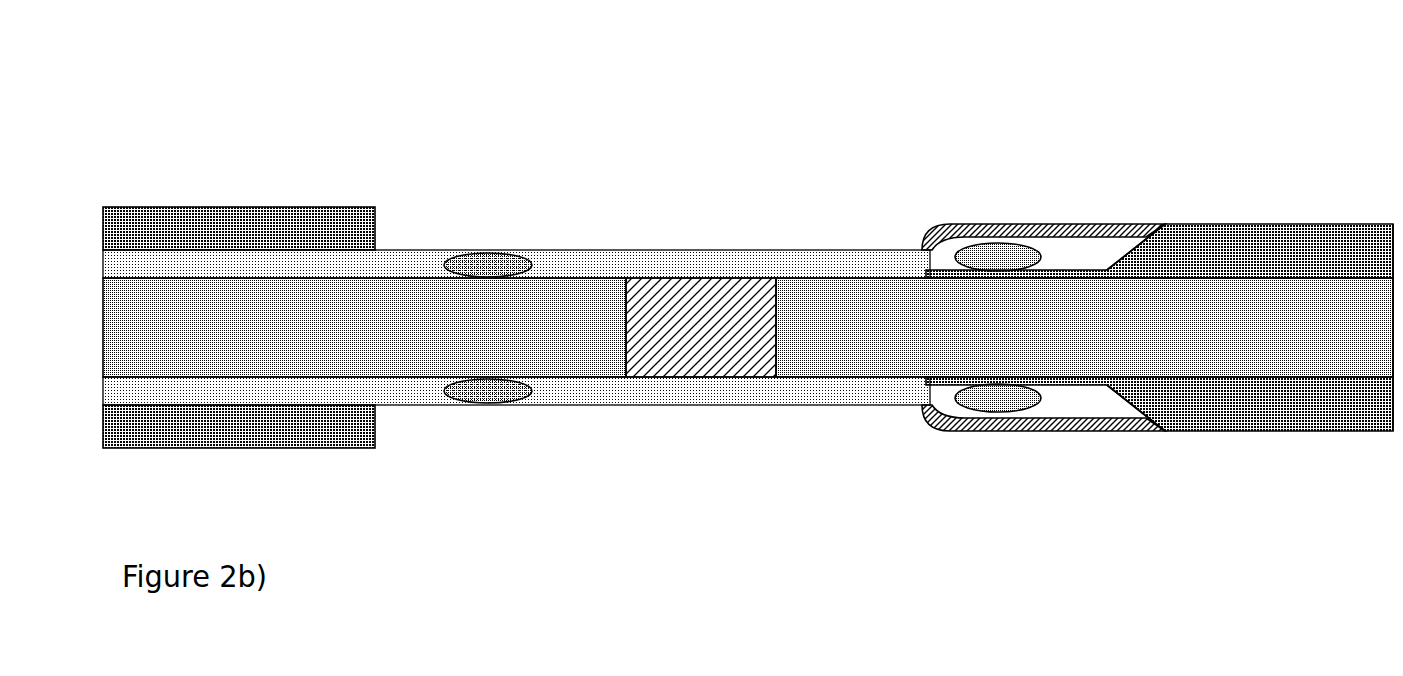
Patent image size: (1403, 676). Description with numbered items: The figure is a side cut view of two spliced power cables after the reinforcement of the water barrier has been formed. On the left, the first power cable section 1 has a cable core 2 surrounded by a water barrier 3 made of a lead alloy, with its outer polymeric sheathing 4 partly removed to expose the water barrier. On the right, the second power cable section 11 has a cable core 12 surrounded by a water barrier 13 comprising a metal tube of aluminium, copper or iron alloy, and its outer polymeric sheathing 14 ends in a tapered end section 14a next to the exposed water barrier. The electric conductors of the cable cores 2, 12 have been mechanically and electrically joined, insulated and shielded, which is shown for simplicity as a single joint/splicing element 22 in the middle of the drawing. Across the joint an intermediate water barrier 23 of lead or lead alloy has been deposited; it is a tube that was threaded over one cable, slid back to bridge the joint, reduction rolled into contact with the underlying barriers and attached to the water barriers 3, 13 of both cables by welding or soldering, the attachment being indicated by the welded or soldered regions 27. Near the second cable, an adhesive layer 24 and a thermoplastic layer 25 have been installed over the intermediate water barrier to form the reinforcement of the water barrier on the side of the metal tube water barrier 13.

The first power cable section 1 is at (312, 168).
The cable core 2 is at (364, 327).
The water barrier 3 is at (516, 329).
The outer polymeric sheathing 4 is at (239, 327).
The second power cable section 11 is at (1217, 188).
The cable core 12 is at (1084, 327).
The water barrier 13 is at (1362, 223).
The outer polymeric sheathing 14 is at (1159, 327).
The tapered end section 14a is at (1130, 222).
The joint/splicing element 22 is at (701, 327).
The intermediate water barrier 23 is at (765, 328).
The gap/filler region 24 is at (1036, 327).
The protective sheath 25 is at (1048, 222).
The welded/soldered regions 27 is at (742, 327).